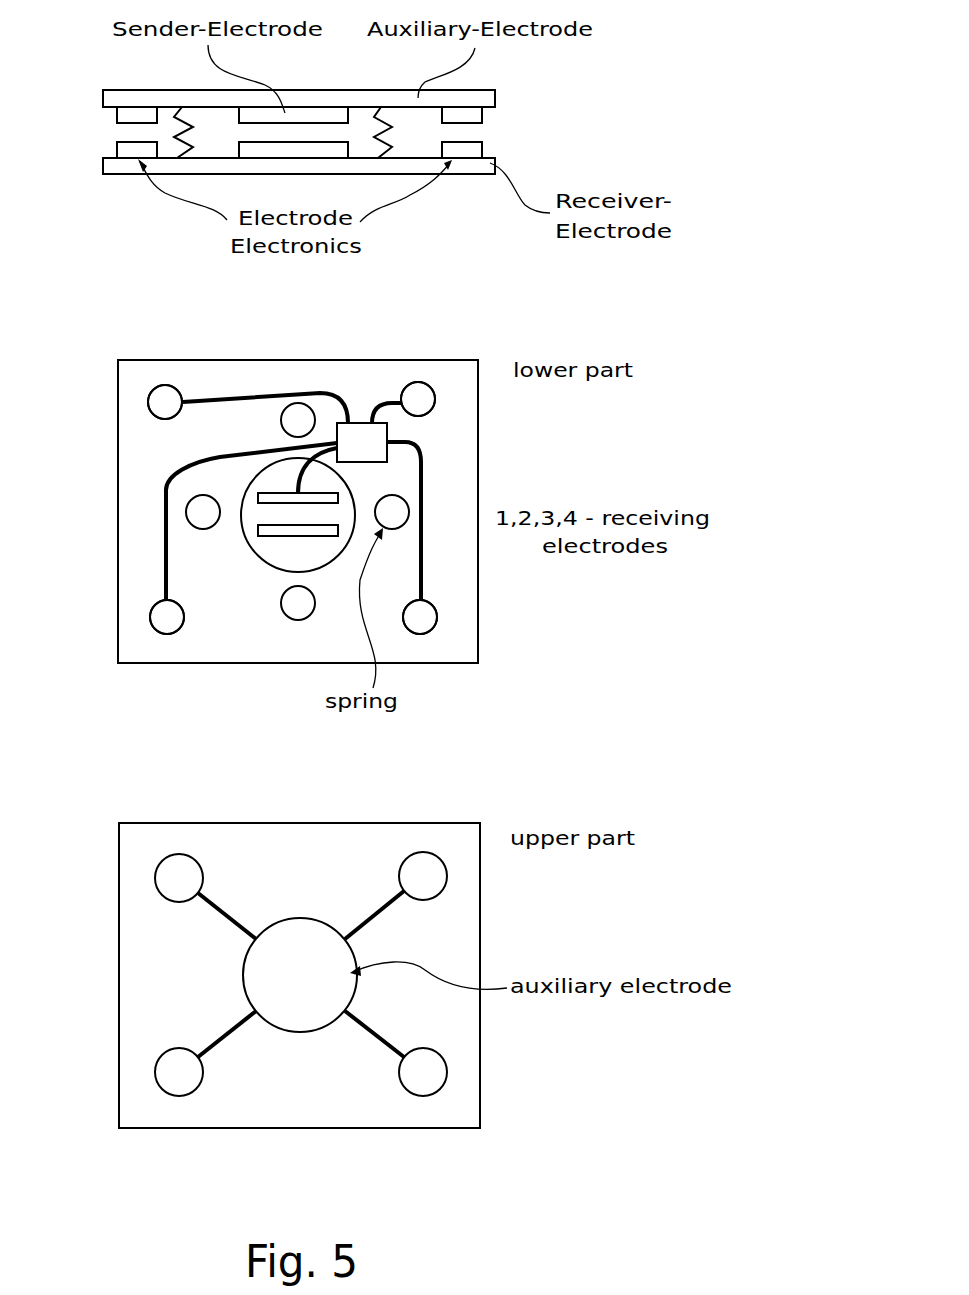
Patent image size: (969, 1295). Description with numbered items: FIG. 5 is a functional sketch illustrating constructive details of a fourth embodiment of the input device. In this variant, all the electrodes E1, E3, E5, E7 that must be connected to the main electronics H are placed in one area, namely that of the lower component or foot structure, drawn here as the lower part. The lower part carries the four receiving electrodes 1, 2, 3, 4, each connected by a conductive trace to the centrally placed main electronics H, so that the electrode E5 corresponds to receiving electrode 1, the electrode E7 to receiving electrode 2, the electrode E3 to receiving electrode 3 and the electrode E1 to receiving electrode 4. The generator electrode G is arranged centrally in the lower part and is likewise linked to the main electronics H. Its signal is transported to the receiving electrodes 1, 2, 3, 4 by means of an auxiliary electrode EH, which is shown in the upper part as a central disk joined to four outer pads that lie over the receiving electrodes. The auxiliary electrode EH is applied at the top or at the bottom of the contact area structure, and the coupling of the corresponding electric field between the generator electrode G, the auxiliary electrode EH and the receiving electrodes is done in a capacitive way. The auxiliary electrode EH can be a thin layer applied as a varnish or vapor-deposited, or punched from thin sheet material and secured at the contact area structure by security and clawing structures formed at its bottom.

The receiving electrode 1 is at (157, 400).
The receiving electrode 2 is at (428, 398).
The receiving electrode 3 is at (427, 608).
The receiving electrode 4 is at (160, 608).
The electrode E1 is at (165, 618).
The electrode E3 is at (420, 618).
The electrode E5 is at (165, 395).
The electrode E7 is at (418, 395).
The main electronics H is at (375, 442).
The generator electrode G is at (277, 552).
The auxiliary electrode EH is at (295, 1002).